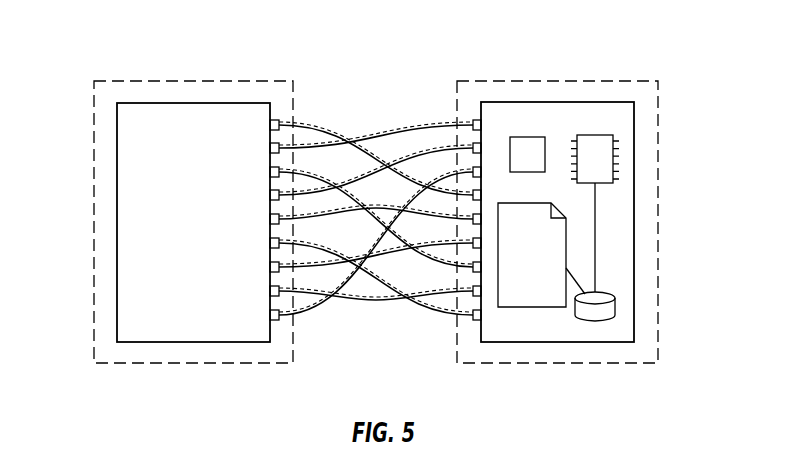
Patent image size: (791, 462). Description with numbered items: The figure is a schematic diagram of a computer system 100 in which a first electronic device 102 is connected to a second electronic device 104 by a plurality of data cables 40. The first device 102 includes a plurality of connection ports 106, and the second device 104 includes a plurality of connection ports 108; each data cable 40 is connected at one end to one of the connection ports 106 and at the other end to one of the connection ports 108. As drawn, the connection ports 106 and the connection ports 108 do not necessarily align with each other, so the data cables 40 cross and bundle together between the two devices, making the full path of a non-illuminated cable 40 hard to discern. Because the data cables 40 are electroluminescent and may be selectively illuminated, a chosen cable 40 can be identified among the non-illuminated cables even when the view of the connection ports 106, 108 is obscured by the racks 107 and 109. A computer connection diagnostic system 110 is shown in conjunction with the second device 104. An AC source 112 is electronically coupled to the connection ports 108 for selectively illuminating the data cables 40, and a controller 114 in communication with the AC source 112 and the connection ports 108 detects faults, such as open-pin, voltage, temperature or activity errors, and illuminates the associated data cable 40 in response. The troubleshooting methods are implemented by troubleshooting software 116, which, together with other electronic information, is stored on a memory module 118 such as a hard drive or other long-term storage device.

The computer system 100 is at (407, 45).
The first electronic device 102 is at (136, 68).
The second electronic device 104 is at (607, 68).
The connection ports 106 is at (276, 110).
The rack 107 is at (207, 81).
The connection ports 108 is at (476, 110).
The rack 109 is at (537, 81).
The computer connection diagnostic system 110 is at (609, 120).
The AC source 112 is at (528, 137).
The controller 114 is at (619, 168).
The troubleshooting software 116 is at (538, 307).
The memory module 118 is at (615, 310).
The data cables 40 is at (397, 125).